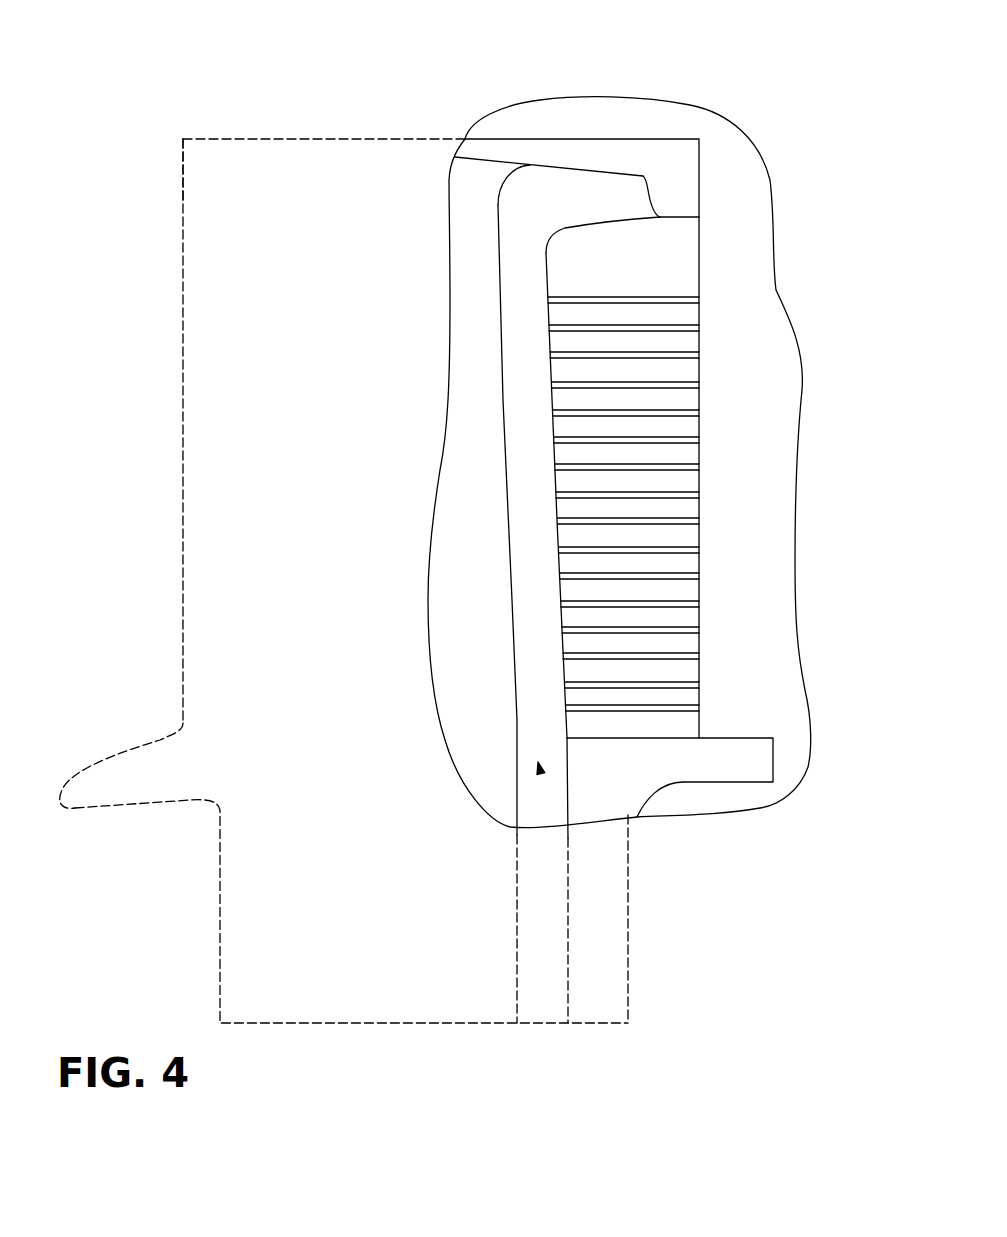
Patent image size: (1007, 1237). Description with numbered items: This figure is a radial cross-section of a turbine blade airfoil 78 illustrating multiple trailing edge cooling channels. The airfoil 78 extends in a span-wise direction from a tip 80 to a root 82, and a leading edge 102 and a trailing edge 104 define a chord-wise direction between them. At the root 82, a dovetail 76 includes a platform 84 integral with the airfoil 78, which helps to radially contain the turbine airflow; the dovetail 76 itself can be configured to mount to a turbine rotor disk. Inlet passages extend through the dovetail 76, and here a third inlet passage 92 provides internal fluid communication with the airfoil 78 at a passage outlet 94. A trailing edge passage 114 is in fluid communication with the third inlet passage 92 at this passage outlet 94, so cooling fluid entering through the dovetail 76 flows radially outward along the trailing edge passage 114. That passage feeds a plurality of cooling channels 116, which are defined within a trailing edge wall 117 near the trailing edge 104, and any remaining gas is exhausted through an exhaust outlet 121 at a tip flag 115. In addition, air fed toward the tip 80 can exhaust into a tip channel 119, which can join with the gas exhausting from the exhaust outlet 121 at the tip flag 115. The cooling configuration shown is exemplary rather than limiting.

The dovetail 76 is at (640, 907).
The airfoil 78 is at (171, 365).
The tip 80 is at (273, 139).
The root 82 is at (183, 638).
The platform 84 is at (163, 802).
The third inlet passage 92 is at (533, 930).
The passage outlet 94 is at (533, 830).
The leading edge 102 is at (182, 158).
The trailing edge 104 is at (702, 172).
The trailing edge passage 114 is at (541, 773).
The tip flag 115 is at (673, 197).
The cooling channels 116 is at (688, 337).
The trailing edge wall 117 is at (630, 358).
The tip channel 119 is at (532, 157).
The exhaust outlet 121 is at (623, 201).